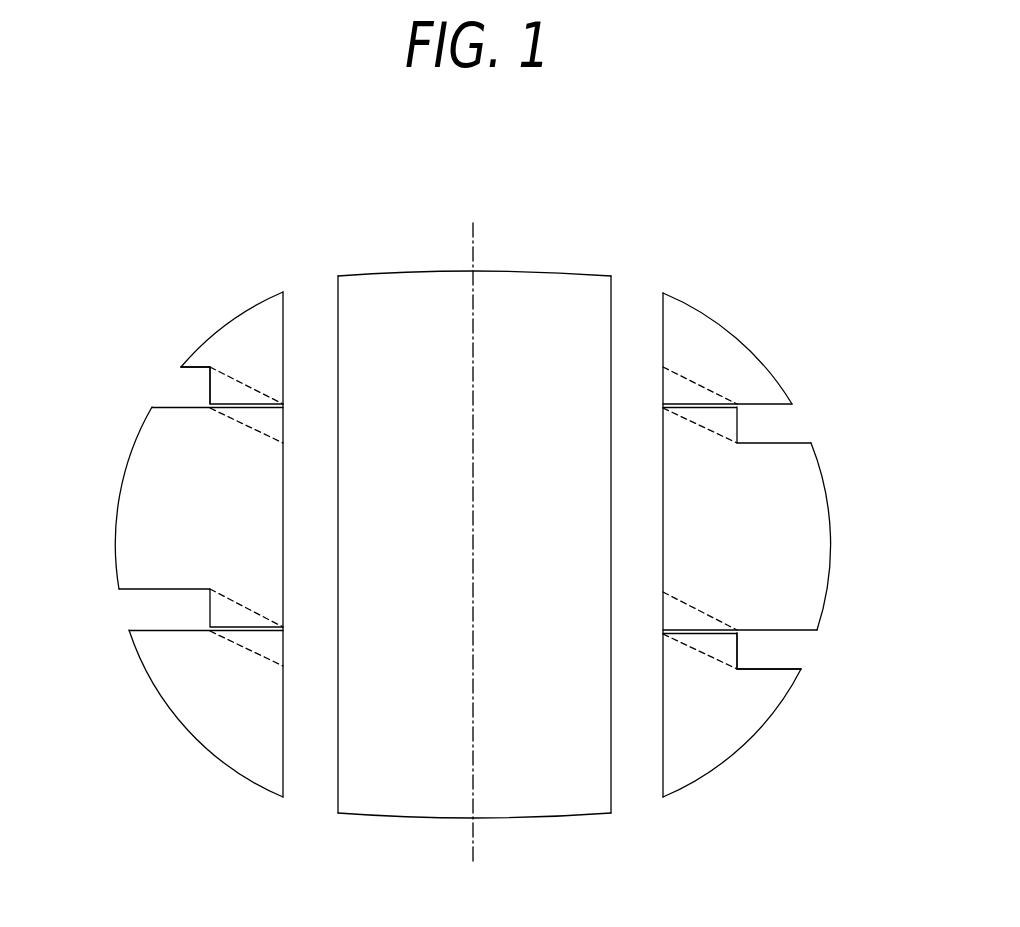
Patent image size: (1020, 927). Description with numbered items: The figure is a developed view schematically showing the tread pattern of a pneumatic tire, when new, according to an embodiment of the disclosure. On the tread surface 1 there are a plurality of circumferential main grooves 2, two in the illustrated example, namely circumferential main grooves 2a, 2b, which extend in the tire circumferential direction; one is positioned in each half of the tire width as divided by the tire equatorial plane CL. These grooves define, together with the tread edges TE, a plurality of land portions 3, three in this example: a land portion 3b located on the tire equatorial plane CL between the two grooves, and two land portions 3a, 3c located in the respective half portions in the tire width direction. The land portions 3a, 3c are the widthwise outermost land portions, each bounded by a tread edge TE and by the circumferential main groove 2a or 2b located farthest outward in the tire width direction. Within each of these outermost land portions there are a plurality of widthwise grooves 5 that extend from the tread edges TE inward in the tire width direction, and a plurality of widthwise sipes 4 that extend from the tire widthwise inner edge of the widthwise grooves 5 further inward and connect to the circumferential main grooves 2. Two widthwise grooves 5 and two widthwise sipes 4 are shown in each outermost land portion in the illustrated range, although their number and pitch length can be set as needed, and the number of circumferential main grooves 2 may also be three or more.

The tread surface 1 is at (718, 139).
The circumferential main grooves 2 is at (468, 578).
The circumferential main groove 2a is at (314, 785).
The circumferential main groove 2b is at (646, 782).
The land portions 3 is at (465, 574).
The land portion 3a is at (220, 737).
The land portion 3b is at (411, 800).
The land portion 3c is at (710, 748).
The widthwise sipes 4 is at (244, 407).
The widthwise grooves 5 is at (191, 388).
The tread edges TE is at (115, 541).
The tire equatorial plane CL is at (476, 528).